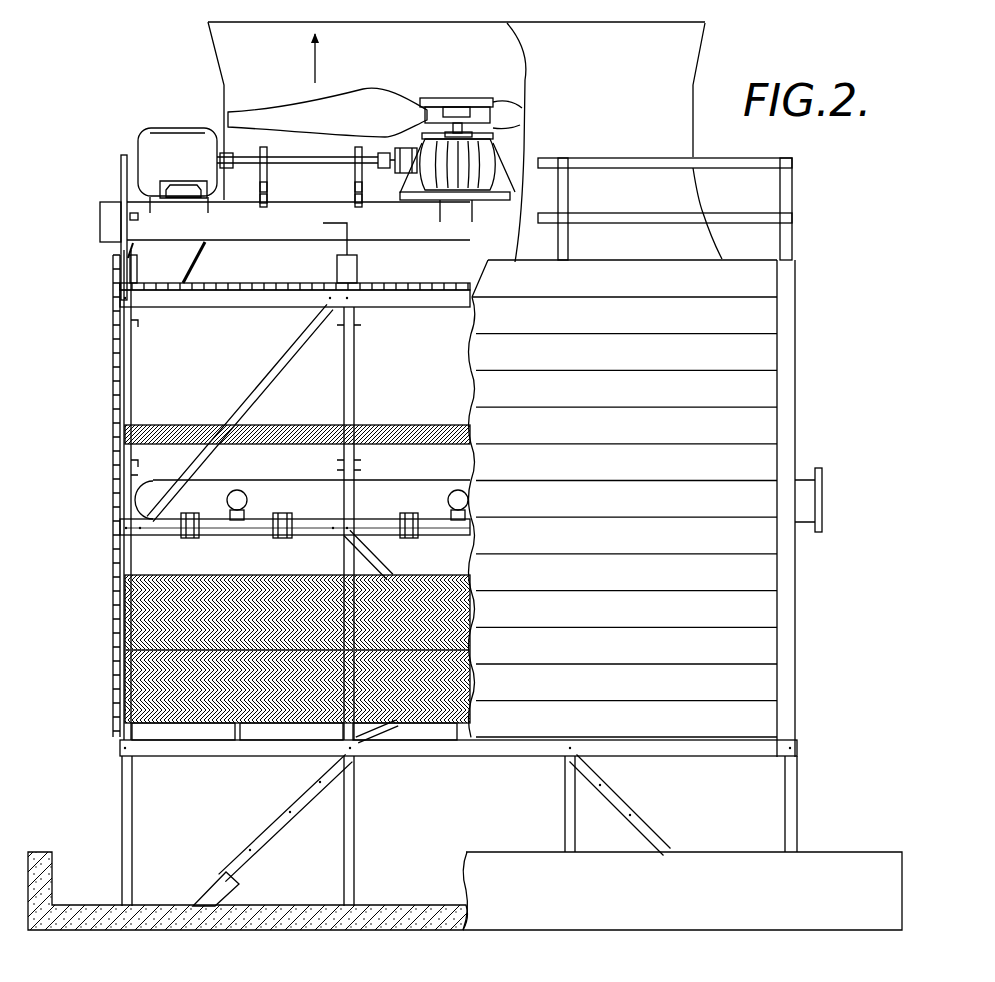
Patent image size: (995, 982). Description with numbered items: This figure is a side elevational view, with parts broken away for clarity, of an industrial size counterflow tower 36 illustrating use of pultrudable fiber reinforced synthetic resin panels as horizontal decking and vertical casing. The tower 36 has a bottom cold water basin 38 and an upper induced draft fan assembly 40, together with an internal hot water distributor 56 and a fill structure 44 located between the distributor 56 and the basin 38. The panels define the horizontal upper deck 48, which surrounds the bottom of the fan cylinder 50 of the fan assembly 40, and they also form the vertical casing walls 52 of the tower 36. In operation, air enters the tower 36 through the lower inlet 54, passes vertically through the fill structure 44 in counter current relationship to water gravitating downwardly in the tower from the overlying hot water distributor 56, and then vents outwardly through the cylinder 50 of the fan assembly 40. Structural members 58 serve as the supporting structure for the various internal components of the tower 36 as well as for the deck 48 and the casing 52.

The counterflow tower 36 is at (110, 519).
The cold water basin 38 is at (285, 933).
The induced draft fan assembly 40 is at (386, 79).
The fill structure 44 is at (246, 572).
The horizontal upper deck 48 is at (377, 281).
The fan cylinder 50 is at (220, 100).
The vertical casing walls 52 is at (766, 317).
The lower inlet 54 is at (830, 793).
The hot water distributor 56 is at (252, 518).
The structural members 58 is at (176, 303).